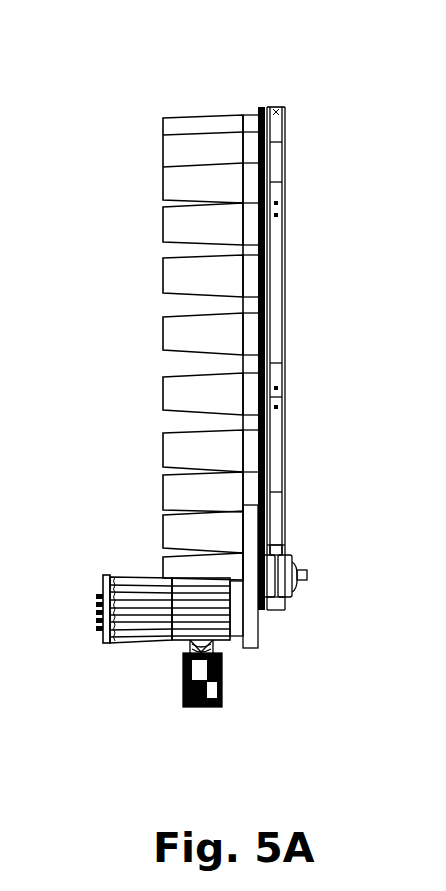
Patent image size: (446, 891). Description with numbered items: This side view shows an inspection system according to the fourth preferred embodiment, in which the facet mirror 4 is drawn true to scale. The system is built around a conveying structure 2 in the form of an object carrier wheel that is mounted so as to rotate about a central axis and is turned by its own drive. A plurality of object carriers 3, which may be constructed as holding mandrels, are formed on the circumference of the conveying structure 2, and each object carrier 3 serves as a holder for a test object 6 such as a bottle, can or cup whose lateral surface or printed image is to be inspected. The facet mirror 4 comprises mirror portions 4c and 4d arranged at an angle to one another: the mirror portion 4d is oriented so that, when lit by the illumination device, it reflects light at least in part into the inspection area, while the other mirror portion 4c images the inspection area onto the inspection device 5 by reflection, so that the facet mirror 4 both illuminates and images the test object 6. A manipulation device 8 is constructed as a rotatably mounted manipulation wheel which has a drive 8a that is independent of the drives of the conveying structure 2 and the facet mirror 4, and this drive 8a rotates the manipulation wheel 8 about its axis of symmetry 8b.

The conveying structure 2 is at (275, 107).
The object carrier 3 is at (259, 110).
The facet mirror 4 is at (164, 647).
The mirror portion 4c is at (228, 642).
The mirror portion 4d is at (130, 647).
The inspection device 5 is at (197, 708).
The test object 6 is at (163, 338).
The manipulation device 8 is at (258, 637).
The drive 8a is at (291, 553).
The axis of symmetry 8b is at (308, 576).